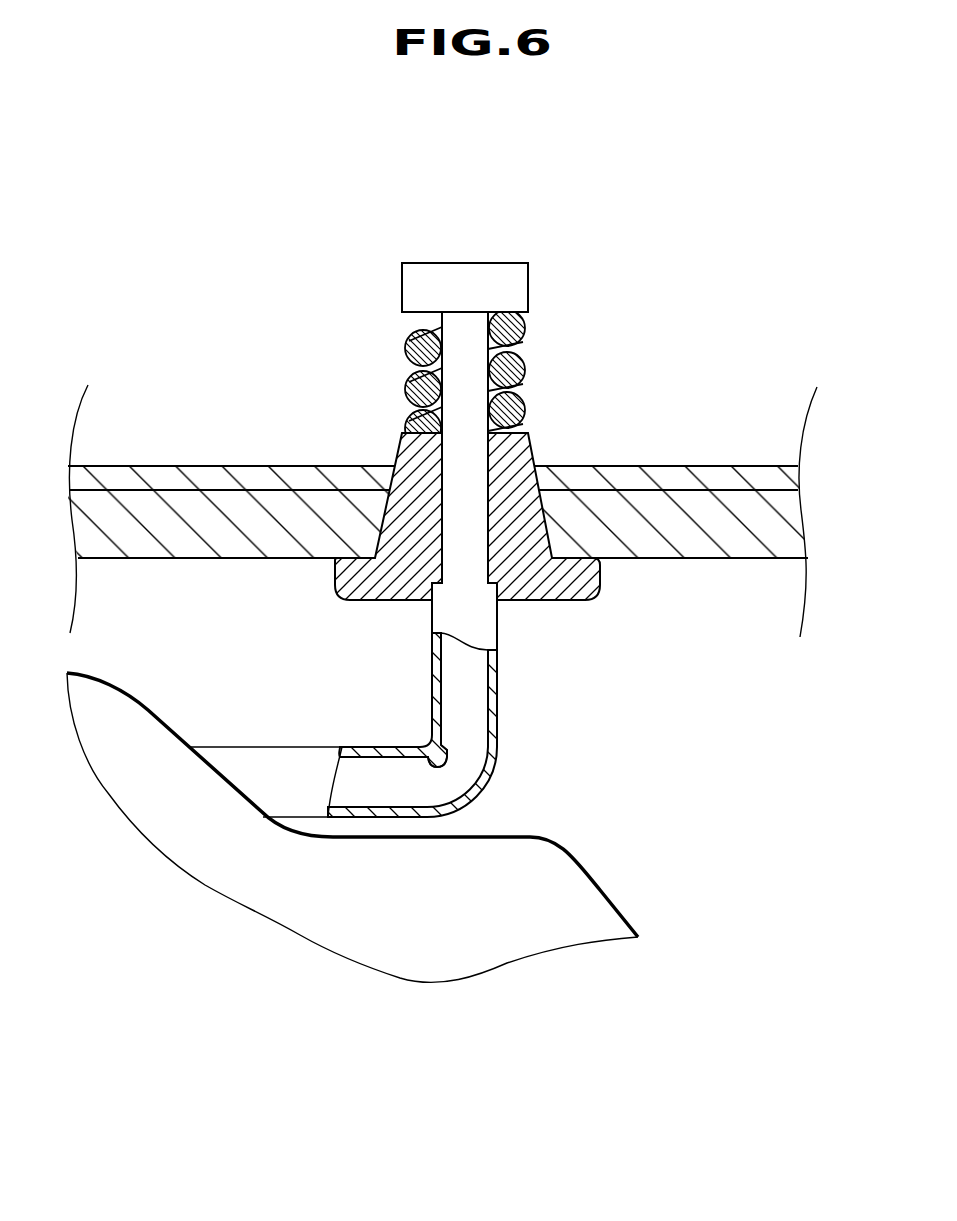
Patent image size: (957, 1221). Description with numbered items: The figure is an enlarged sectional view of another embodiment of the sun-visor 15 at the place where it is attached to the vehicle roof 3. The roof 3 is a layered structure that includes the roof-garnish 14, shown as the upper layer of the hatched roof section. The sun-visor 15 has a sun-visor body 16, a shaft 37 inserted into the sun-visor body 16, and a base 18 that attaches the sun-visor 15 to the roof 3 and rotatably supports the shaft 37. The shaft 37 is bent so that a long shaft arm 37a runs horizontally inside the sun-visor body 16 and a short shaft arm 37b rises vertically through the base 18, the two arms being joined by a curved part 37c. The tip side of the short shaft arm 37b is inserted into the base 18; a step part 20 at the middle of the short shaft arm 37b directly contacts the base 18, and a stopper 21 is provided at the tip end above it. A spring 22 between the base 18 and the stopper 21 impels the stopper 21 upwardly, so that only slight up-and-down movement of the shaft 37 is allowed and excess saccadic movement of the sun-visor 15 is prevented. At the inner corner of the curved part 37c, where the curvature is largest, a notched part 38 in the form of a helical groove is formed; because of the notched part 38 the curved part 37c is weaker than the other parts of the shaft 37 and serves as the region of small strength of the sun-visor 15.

The roof 3 is at (172, 465).
The roof-garnish 14 is at (280, 490).
The sun-visor 15 is at (152, 706).
The sun-visor body 16 is at (207, 837).
The base 18 is at (575, 580).
The step part 20 is at (497, 578).
The stopper 21 is at (502, 270).
The spring 22 is at (515, 365).
The shaft 37 is at (432, 810).
The long shaft arm 37a is at (375, 818).
The short shaft arm 37b is at (497, 702).
The curved part 37c is at (480, 793).
The notched part 38 is at (446, 752).